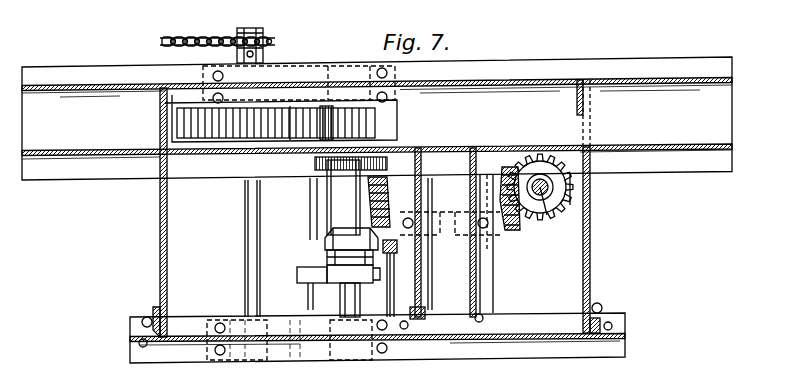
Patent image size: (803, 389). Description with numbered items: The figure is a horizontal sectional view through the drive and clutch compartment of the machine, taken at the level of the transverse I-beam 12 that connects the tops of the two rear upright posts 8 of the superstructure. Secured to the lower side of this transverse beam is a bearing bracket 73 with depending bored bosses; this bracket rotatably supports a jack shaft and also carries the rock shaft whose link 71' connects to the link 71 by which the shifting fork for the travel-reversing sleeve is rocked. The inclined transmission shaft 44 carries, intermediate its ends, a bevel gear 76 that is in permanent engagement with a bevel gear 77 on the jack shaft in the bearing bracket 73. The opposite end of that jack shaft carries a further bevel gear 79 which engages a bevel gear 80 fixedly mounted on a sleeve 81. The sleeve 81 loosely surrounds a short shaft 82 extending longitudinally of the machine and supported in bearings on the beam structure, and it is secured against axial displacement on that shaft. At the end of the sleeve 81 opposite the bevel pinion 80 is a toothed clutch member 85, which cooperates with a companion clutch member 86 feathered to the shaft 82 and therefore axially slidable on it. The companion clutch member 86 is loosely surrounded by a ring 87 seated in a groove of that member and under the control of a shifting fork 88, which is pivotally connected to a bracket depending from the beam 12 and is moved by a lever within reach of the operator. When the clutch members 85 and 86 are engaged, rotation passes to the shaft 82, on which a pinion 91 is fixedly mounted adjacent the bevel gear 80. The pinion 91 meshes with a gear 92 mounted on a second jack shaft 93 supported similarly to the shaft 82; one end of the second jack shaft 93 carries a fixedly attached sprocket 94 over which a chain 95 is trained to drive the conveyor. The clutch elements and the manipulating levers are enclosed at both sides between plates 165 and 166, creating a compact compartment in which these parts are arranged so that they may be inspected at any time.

The upright posts 8 is at (147, 321).
The transverse I-beam 12 is at (128, 348).
The inclined transmission shaft 44 is at (547, 215).
The link 71 is at (420, 278).
The link 71' is at (427, 285).
The bearing bracket 73 is at (493, 278).
The bevel gear 76 is at (572, 207).
The bevel gear 77 is at (520, 228).
The bevel gear 79 is at (378, 190).
The bevel gear 80 is at (312, 168).
The sleeve 81 is at (333, 190).
The short shaft 82 is at (345, 300).
The clutch member 85 is at (328, 240).
The companion clutch member 86 is at (328, 260).
The ring 87 is at (300, 272).
The shifting fork 88 is at (305, 280).
The pinion 91 is at (396, 139).
The gear 92 is at (293, 128).
The second jack shaft 93 is at (246, 208).
The sprocket 94 is at (263, 32).
The chain 95 is at (160, 43).
The plate 165 is at (160, 235).
The plate 166 is at (592, 250).